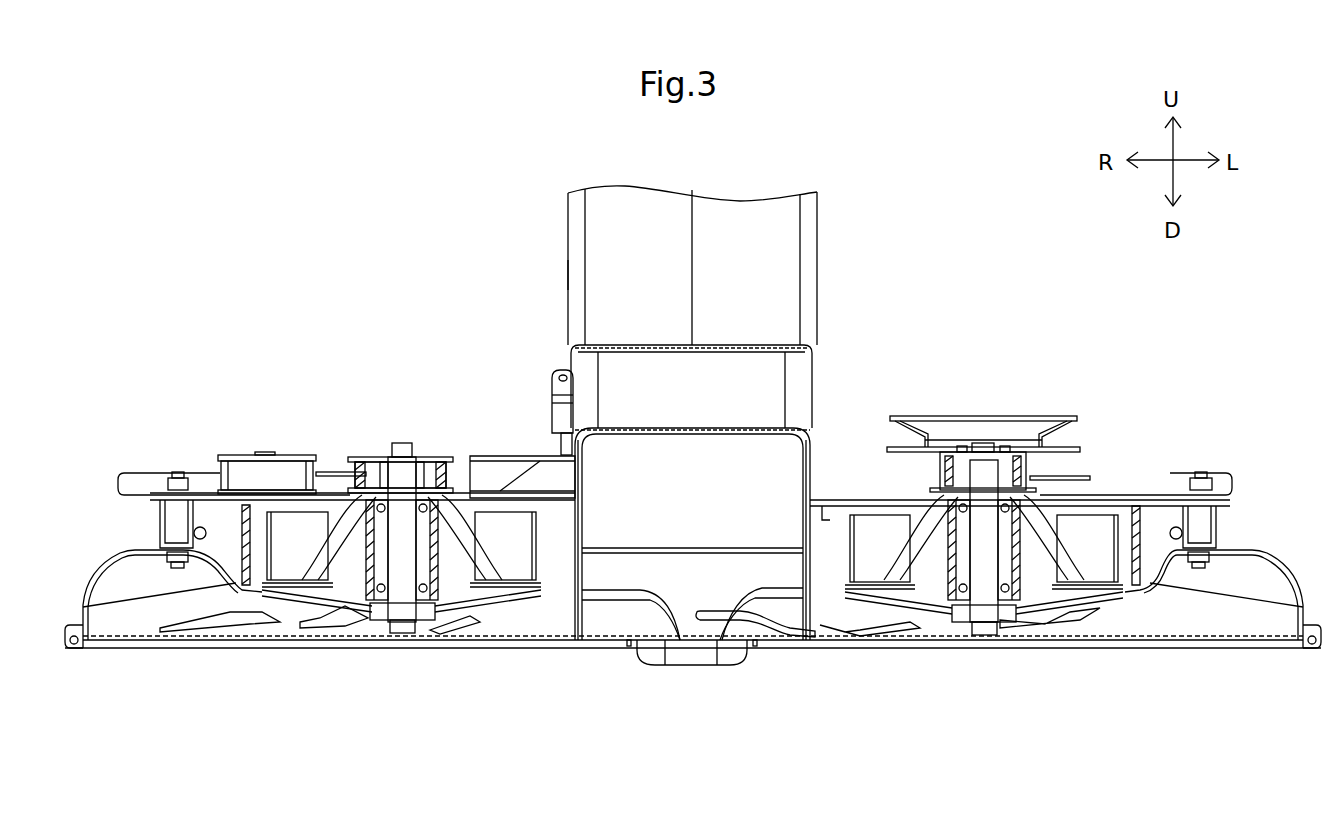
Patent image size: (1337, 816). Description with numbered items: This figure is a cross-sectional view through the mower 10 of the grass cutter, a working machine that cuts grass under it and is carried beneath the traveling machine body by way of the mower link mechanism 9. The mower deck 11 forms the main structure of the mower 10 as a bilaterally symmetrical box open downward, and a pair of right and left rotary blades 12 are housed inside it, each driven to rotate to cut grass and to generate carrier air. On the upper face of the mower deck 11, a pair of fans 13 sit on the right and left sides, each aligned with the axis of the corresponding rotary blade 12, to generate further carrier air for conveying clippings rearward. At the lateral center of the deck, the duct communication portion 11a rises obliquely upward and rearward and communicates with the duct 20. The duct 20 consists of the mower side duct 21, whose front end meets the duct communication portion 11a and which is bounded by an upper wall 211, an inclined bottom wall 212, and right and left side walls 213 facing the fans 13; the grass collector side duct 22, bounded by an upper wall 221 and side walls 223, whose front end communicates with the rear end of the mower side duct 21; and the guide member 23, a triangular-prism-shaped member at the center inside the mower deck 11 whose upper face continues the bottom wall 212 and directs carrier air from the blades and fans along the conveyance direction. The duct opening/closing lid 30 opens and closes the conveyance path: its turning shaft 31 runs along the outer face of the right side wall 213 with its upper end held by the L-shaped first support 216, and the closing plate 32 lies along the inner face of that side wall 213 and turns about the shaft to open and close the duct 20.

The mower link mechanism 9 is at (1080, 430).
The mower 10 is at (1187, 440).
The mower deck 11 is at (1262, 548).
The duct communication portion 11a is at (806, 538).
The rotary blades 12 is at (440, 608).
The fans 13 is at (343, 465).
The duct 20 is at (855, 200).
The mower side duct 21 is at (824, 374).
The grass collector side duct 22 is at (824, 260).
The guide member 23 is at (683, 597).
The duct opening/closing lid 30 is at (598, 481).
The turning shaft 31 is at (560, 446).
The closing plate 32 is at (590, 458).
The upper wall 211 is at (754, 450).
The bottom wall 212 is at (690, 530).
The side walls 213 is at (810, 487).
The first support 216 is at (556, 402).
The upper wall 221 is at (745, 315).
The side walls 223 is at (568, 274).